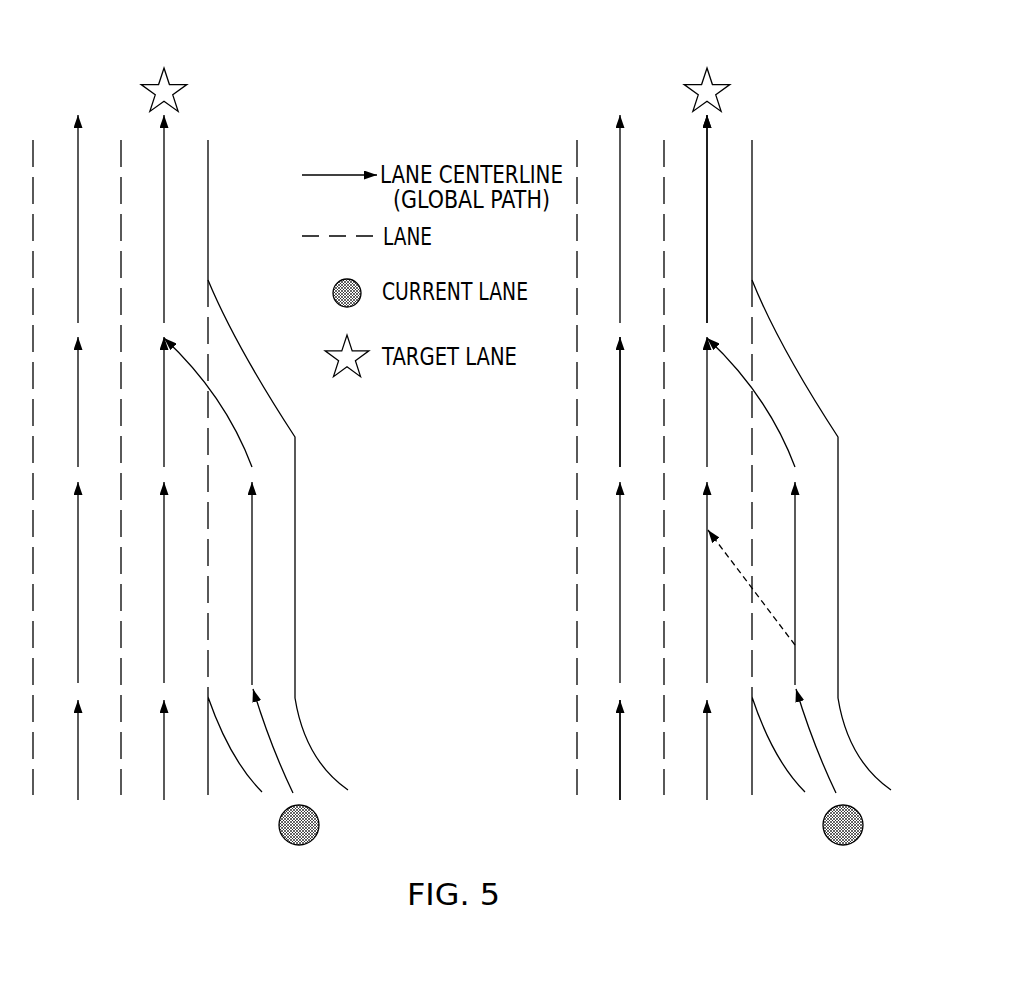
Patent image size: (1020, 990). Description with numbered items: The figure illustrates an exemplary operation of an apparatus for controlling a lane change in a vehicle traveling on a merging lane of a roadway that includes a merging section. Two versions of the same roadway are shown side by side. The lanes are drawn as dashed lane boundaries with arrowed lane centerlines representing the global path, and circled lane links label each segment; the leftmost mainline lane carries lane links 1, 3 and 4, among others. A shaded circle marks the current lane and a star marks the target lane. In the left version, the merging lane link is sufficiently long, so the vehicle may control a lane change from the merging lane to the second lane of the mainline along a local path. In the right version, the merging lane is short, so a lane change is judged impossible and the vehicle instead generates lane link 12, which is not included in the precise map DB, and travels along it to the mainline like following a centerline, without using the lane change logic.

The first lane segment (lane 1) 1 is at (58, 750).
The third lane segment (lane 3) 3 is at (58, 402).
The fourth lane segment (lane 4) 4 is at (58, 219).
The lane link 12 is at (751, 587).